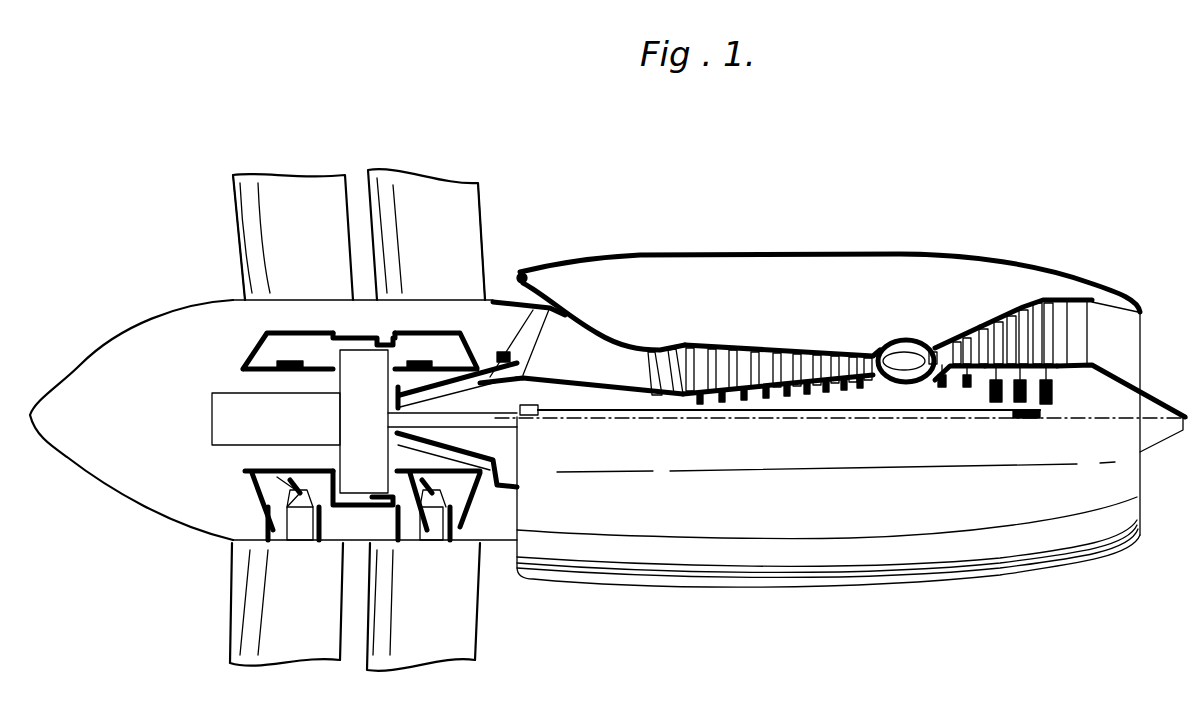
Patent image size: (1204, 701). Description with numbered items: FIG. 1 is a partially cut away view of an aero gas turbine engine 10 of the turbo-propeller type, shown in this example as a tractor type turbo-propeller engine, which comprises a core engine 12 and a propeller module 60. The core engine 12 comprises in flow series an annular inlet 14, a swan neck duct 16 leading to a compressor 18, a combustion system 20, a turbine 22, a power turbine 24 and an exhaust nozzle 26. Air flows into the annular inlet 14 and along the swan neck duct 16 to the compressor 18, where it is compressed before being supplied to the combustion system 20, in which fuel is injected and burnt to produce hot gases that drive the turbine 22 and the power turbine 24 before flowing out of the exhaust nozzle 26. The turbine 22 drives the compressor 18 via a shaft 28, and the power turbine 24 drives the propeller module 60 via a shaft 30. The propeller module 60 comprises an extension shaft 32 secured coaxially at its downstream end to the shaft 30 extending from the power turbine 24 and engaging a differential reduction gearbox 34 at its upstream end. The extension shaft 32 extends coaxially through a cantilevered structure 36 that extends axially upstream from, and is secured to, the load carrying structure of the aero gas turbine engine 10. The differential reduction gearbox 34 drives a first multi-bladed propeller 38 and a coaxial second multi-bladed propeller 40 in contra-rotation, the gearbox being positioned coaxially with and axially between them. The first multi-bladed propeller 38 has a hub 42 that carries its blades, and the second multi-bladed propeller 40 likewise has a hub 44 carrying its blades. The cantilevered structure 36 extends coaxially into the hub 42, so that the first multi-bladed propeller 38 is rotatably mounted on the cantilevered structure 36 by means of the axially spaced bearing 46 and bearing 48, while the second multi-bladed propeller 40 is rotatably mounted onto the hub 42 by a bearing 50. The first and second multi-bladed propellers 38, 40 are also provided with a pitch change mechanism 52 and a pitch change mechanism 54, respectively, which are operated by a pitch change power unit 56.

The aero gas turbine engine 10 is at (634, 210).
The core engine 12 is at (837, 247).
The annular inlet 14 is at (528, 270).
The swan neck duct 16 is at (597, 320).
The compressor 18 is at (768, 343).
The combustion system 20 is at (898, 352).
The turbine 22 is at (948, 351).
The power turbine 24 is at (1023, 318).
The exhaust nozzle 26 is at (1133, 328).
The shaft 28 is at (902, 384).
The shaft 30 is at (980, 419).
The extension shaft 32 is at (503, 422).
The differential reduction gearbox 34 is at (340, 431).
The cantilevered structure 36 is at (527, 418).
The first multi-bladed propeller 38 is at (395, 172).
The second multi-bladed propeller 40 is at (287, 182).
The hub 42 is at (493, 302).
The hub 44 is at (257, 343).
The bearing 46 is at (498, 353).
The bearing 48 is at (393, 392).
The bearing 50 is at (388, 332).
The pitch change mechanism 52 is at (412, 498).
The pitch change mechanism 54 is at (275, 489).
The pitch change power unit 56 is at (210, 402).
The propeller module 60 is at (490, 180).